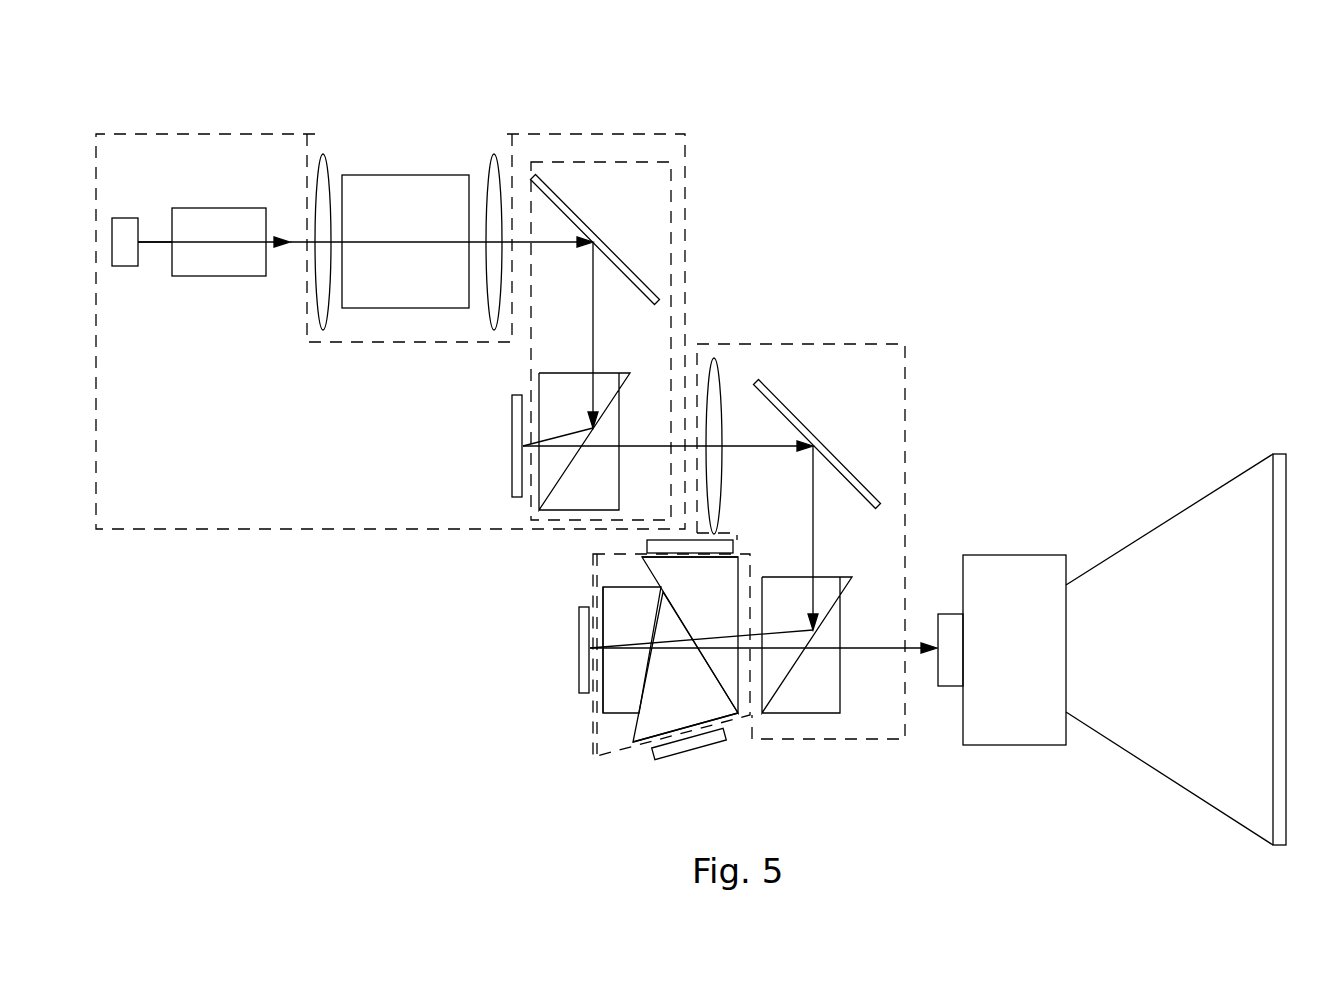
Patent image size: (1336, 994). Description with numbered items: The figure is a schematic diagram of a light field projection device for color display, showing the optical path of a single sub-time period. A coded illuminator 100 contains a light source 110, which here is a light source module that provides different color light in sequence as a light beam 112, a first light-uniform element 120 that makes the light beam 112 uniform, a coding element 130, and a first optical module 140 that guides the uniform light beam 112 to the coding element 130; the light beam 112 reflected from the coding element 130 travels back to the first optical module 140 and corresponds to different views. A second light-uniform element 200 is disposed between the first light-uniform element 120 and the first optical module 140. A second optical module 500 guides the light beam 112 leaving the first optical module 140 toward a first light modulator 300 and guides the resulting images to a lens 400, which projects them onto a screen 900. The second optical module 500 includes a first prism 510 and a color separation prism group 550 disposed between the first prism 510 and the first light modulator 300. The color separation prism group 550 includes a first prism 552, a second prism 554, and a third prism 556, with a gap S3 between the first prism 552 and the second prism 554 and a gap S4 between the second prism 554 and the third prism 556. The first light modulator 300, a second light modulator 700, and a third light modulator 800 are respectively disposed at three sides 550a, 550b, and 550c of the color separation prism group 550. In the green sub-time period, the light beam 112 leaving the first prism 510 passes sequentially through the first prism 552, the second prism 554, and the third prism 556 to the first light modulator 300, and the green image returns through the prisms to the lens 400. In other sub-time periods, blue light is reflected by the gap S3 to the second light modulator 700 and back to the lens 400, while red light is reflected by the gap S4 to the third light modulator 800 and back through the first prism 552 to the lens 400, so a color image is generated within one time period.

The coded illuminator 100 is at (183, 514).
The light source 110 is at (128, 268).
The light beam 112 is at (156, 230).
The first light-uniform element 120 is at (220, 278).
The coding element 130 is at (512, 462).
The first optical module 140 is at (672, 195).
The second light-uniform element 200 is at (400, 175).
The first light modulator 300 is at (585, 676).
The lens 400 is at (1018, 570).
The second optical module 500 is at (812, 344).
The first prism 510 is at (831, 583).
The color separation prism group 550 is at (597, 578).
The side of color separation prism group 550a is at (601, 628).
The side of color separation prism group 550b is at (737, 554).
The side of color separation prism group 550c is at (642, 744).
The first prism 552 is at (732, 594).
The second prism 554 is at (707, 703).
The third prism 556 is at (650, 630).
The second light modulator 700 is at (730, 550).
The third light modulator 800 is at (688, 755).
The screen 900 is at (1276, 452).
The gap S3 is at (727, 687).
The gap S4 is at (632, 697).